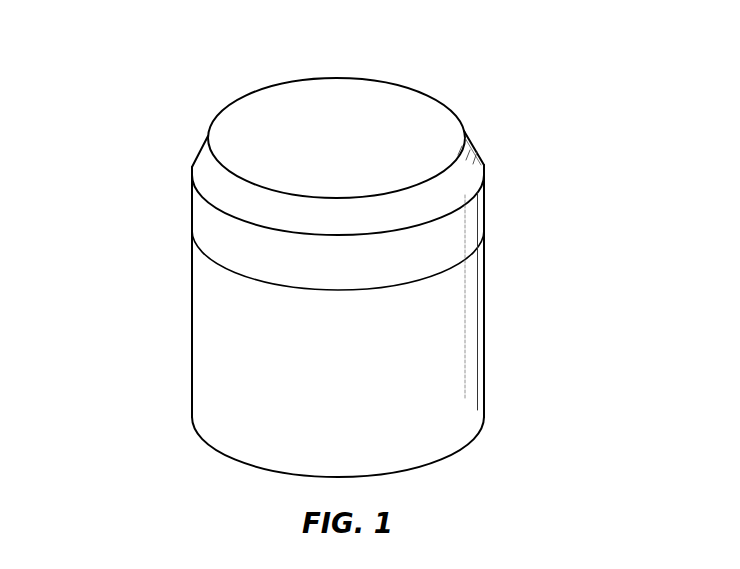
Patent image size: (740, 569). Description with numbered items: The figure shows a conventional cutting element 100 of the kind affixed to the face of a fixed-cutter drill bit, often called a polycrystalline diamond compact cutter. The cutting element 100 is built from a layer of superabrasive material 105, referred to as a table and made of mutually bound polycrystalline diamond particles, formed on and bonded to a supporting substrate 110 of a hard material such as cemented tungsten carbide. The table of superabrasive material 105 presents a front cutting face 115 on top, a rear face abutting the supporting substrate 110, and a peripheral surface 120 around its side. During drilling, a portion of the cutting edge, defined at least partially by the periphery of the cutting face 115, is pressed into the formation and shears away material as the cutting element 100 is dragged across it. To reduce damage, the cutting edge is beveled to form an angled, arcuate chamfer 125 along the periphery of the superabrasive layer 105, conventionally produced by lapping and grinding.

The cutting element 100 is at (156, 89).
The layer of superabrasive material 105 is at (361, 274).
The supporting substrate 110 is at (359, 395).
The front cutting face 115 is at (398, 108).
The peripheral surface 120 is at (440, 238).
The chamfer 125 is at (207, 162).